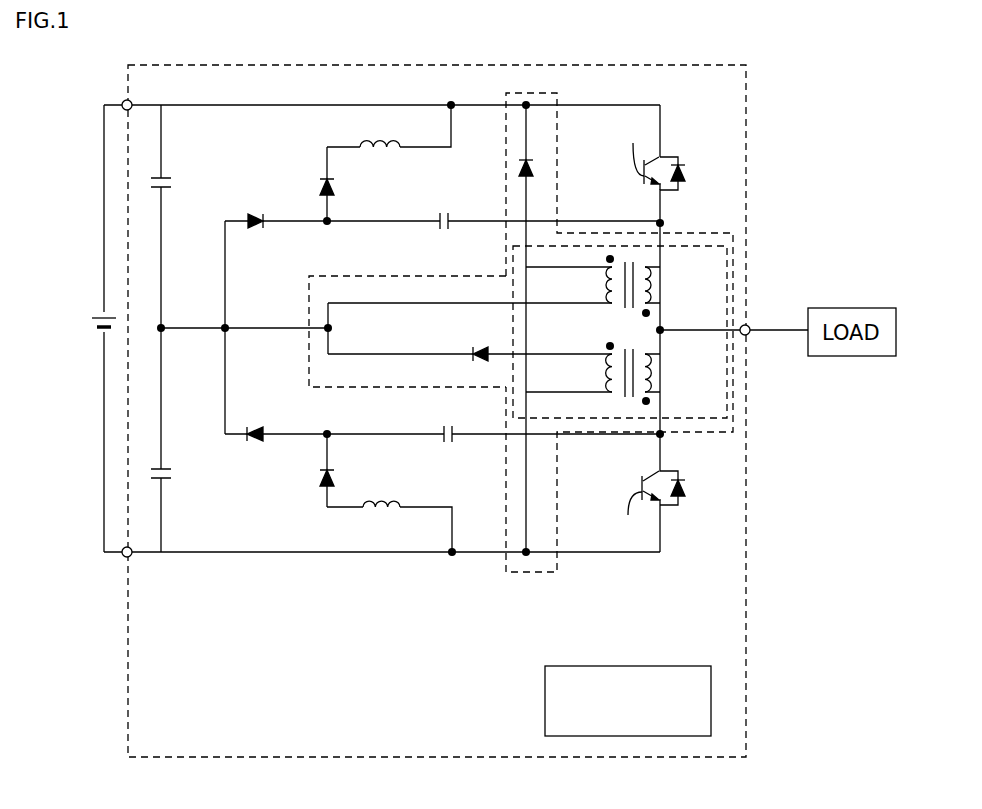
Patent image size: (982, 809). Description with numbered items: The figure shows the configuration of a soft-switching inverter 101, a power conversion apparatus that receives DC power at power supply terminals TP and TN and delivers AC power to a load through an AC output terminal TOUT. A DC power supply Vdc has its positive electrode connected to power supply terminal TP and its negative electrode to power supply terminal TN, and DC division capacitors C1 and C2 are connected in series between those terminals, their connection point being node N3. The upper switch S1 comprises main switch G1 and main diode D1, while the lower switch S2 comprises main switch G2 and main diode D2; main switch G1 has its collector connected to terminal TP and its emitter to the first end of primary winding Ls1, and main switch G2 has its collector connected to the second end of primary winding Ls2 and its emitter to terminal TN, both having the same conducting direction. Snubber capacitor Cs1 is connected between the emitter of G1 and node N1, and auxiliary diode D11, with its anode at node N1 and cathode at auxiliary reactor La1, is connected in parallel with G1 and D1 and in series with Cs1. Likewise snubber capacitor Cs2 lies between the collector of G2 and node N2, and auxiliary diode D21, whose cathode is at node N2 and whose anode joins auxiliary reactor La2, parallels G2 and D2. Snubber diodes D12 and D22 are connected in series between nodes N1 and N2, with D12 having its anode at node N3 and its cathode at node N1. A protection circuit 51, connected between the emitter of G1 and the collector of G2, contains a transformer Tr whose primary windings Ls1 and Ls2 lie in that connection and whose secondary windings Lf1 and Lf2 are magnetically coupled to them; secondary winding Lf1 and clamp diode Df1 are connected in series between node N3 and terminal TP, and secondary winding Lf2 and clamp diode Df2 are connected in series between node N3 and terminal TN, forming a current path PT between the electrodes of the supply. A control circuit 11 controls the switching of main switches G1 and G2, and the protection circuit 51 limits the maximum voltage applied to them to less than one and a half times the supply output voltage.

The soft-switching inverter 101 is at (746, 95).
The protection circuit 51 is at (733, 241).
The control circuit 11 is at (694, 666).
The power supply terminal TP is at (122, 101).
The power supply terminal TN is at (125, 558).
The AC output terminal TOUT is at (752, 325).
The DC power supply Vdc is at (98, 314).
The DC division capacitor C1 is at (172, 183).
The DC division capacitor C2 is at (172, 474).
The node N1 is at (326, 225).
The node N2 is at (328, 432).
The node N3 is at (168, 323).
The auxiliary diode D11 is at (317, 188).
The snubber diode D12 is at (250, 228).
The auxiliary diode D21 is at (323, 490).
The snubber diode D22 is at (265, 440).
The auxiliary reactor La1 is at (374, 150).
The auxiliary reactor La2 is at (376, 509).
The snubber capacitor Cs1 is at (448, 218).
The snubber capacitor Cs2 is at (454, 432).
The current path PT is at (438, 302).
The clamp diode Df1 is at (540, 172).
The clamp diode Df2 is at (470, 360).
The secondary winding Lf1 is at (609, 288).
The secondary winding Lf2 is at (609, 375).
The primary winding Ls1 is at (652, 285).
The primary winding Ls2 is at (652, 373).
The transformer Tr is at (727, 395).
The switch S1 is at (703, 171).
The switch S2 is at (702, 487).
The main switch G1 is at (632, 148).
The main switch G2 is at (630, 516).
The main diode D1 is at (683, 161).
The main diode D2 is at (683, 477).